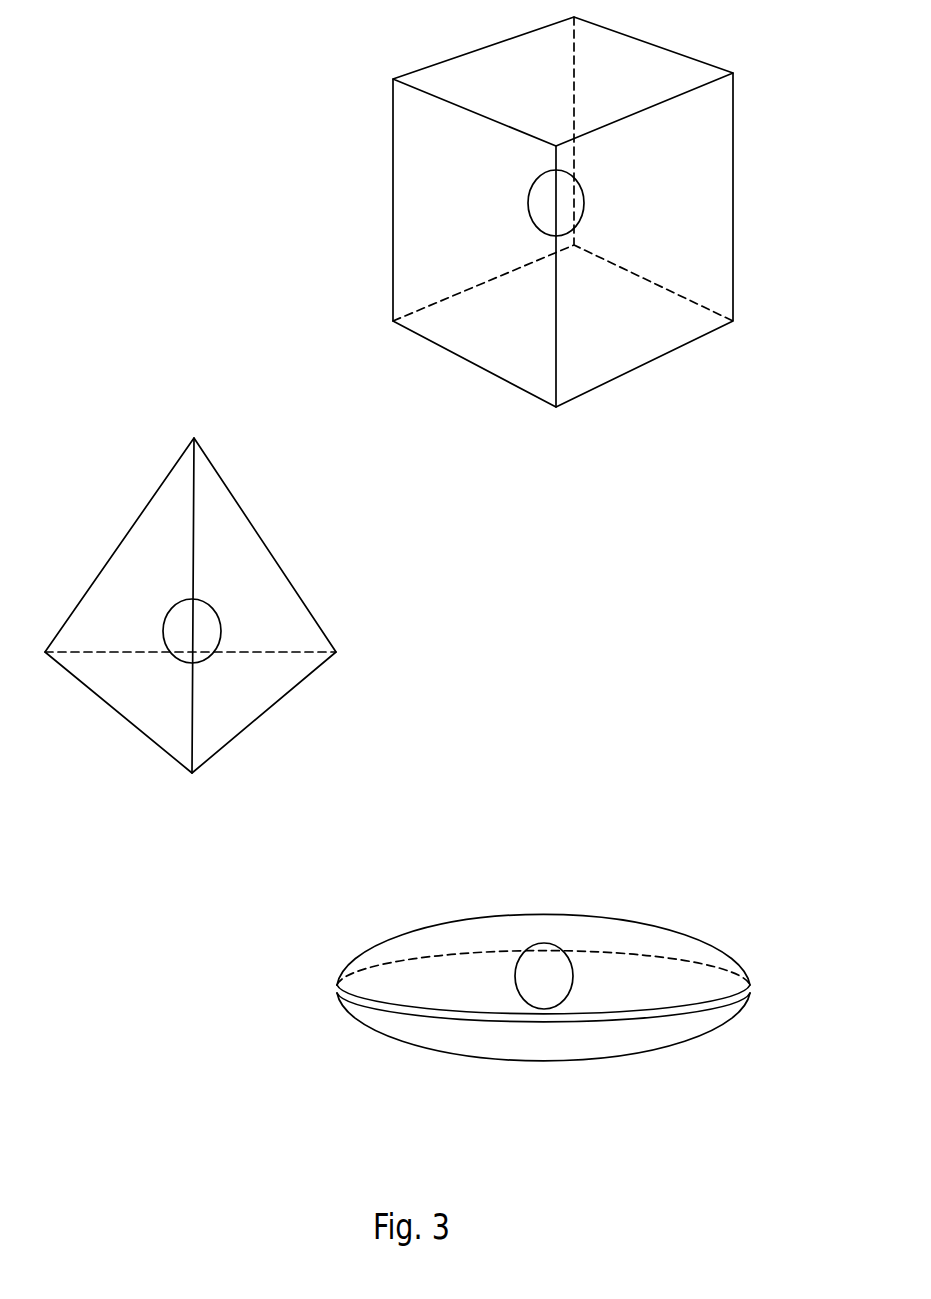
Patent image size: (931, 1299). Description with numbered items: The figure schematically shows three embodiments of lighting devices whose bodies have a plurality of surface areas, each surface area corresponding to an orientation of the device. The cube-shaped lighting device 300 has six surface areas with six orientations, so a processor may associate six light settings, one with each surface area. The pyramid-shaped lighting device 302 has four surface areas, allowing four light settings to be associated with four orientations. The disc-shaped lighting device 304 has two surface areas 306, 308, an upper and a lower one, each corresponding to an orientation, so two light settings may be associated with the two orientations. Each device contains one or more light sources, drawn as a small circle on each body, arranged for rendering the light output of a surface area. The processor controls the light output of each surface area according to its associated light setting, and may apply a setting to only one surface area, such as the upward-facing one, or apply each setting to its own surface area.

The cube-shaped lighting device 300 is at (592, 370).
The pyramid-shaped lighting device 302 is at (208, 745).
The disc-shaped lighting device 304 is at (708, 1027).
The surface area 306 is at (607, 913).
The surface area 308 is at (600, 1064).